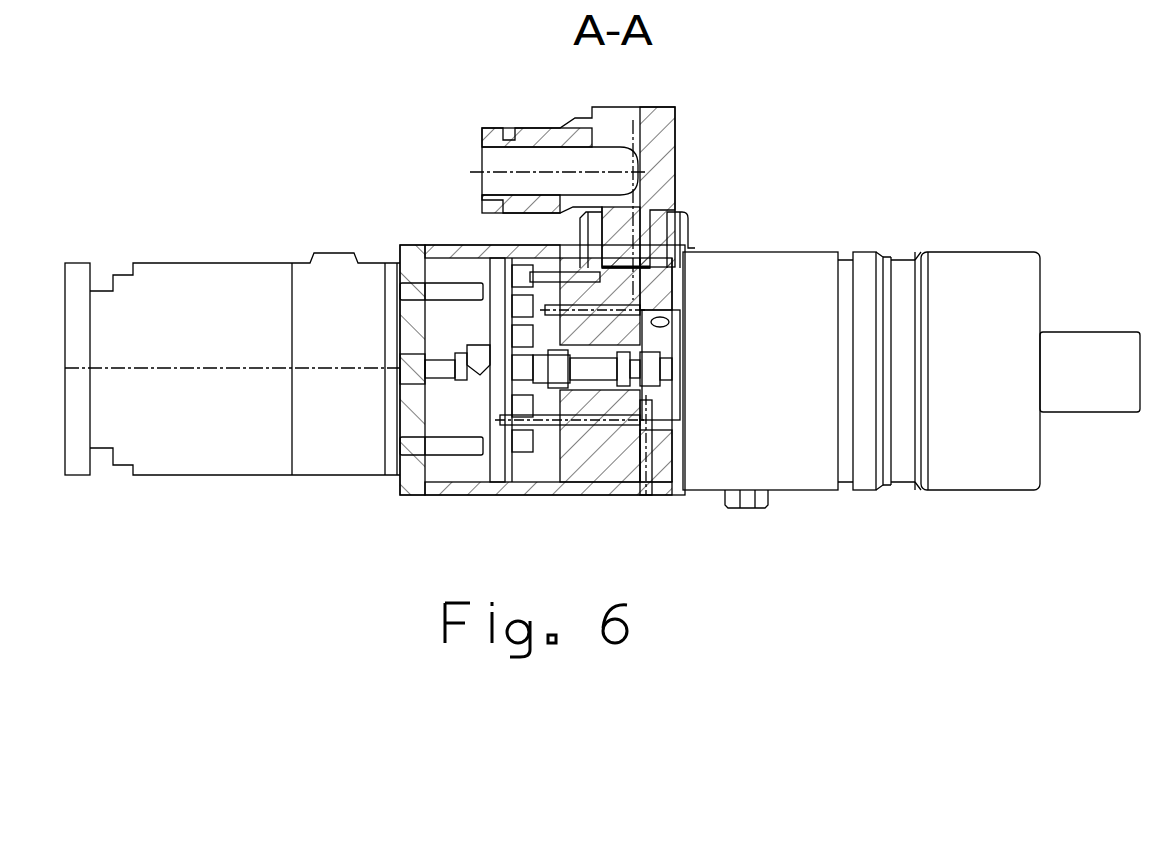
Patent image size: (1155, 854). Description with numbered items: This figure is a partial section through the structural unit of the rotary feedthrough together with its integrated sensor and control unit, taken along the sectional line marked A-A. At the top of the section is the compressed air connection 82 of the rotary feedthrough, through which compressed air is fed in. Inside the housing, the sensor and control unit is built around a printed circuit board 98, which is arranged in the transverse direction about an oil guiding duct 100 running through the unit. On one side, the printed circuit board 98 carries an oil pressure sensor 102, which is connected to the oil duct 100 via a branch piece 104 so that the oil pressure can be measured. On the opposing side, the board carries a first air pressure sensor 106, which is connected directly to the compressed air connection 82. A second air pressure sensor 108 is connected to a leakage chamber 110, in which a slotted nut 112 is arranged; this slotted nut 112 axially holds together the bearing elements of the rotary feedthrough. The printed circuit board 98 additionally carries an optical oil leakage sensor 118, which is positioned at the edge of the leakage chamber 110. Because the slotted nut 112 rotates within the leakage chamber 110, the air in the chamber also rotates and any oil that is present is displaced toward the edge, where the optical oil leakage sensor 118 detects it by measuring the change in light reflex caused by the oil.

The compressed air connection 82 is at (520, 130).
The printed circuit board 98 is at (508, 468).
The oil guiding duct 100 is at (422, 370).
The oil pressure sensor 102 is at (495, 330).
The branch piece 104 is at (465, 372).
The first air pressure sensor 106 is at (520, 273).
The second air pressure sensor 108 is at (525, 427).
The leakage chamber 110 is at (640, 412).
The slotted nut 112 is at (660, 347).
The optical oil leakage sensor 118 is at (608, 308).